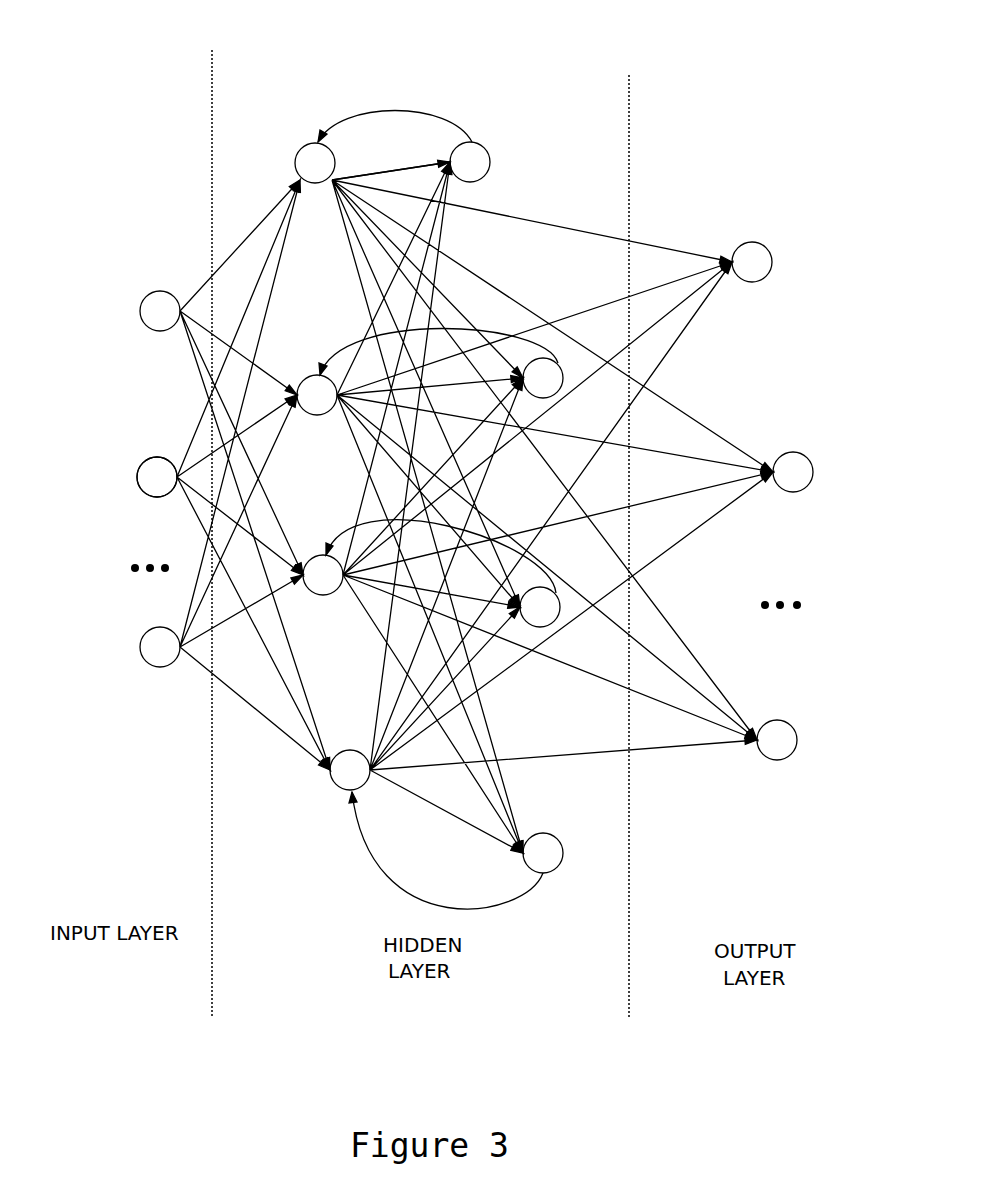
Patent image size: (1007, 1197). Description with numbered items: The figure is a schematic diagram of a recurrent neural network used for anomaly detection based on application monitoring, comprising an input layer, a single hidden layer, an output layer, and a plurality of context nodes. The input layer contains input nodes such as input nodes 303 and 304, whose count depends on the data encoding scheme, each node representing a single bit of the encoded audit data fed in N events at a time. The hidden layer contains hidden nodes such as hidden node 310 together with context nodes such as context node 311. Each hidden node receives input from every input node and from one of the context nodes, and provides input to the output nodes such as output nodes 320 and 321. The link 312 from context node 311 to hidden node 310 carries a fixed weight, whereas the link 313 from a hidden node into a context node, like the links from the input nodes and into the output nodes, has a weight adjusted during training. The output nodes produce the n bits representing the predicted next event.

The input node 303 is at (158, 291).
The input node 304 is at (152, 458).
The hidden node 310 is at (295, 153).
The context node 311 is at (486, 143).
The link 312 is at (406, 108).
The link 313 is at (388, 160).
The output node 320 is at (744, 246).
The output node 321 is at (790, 455).